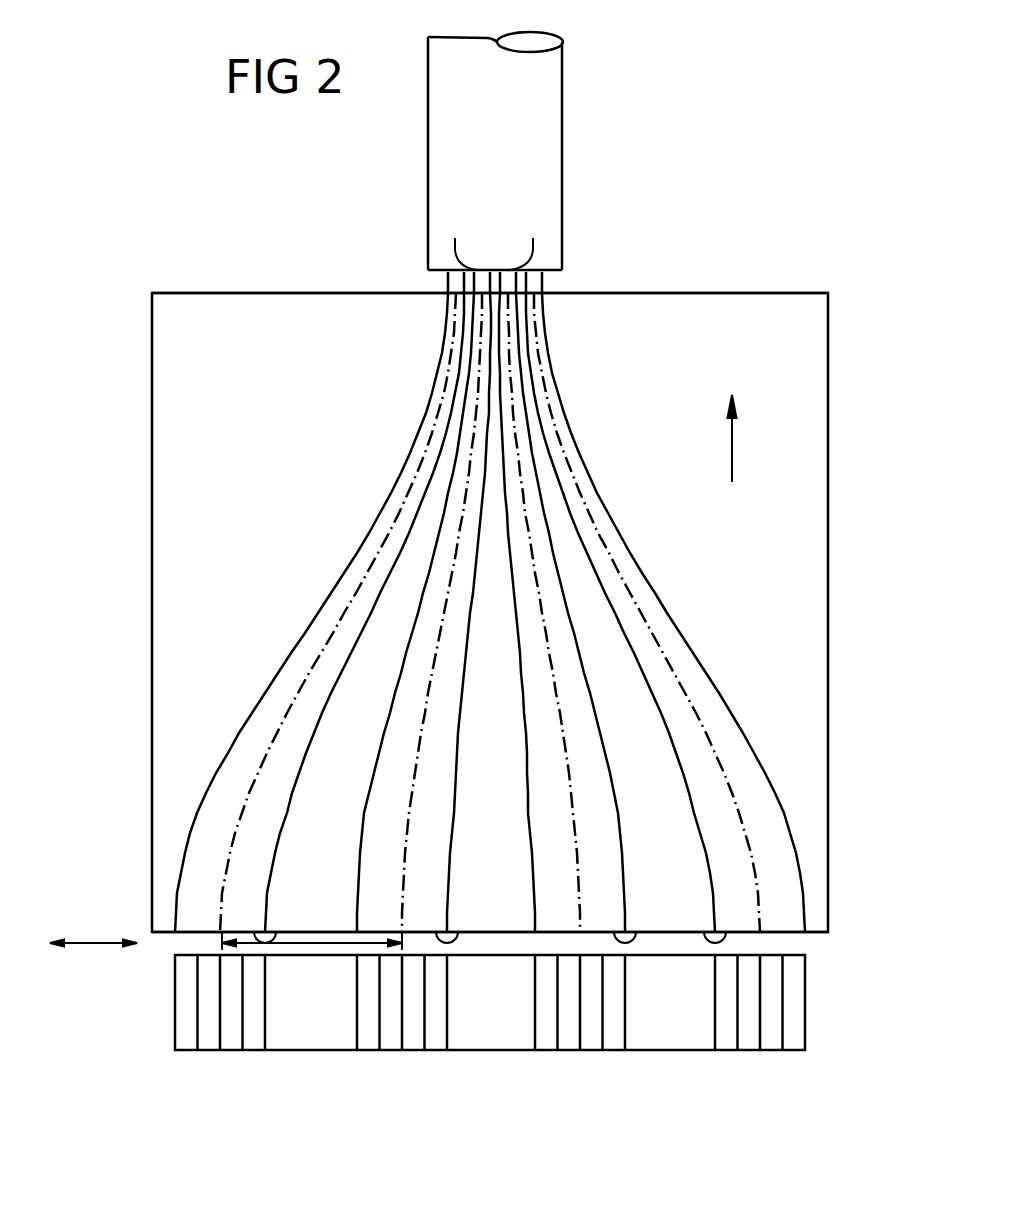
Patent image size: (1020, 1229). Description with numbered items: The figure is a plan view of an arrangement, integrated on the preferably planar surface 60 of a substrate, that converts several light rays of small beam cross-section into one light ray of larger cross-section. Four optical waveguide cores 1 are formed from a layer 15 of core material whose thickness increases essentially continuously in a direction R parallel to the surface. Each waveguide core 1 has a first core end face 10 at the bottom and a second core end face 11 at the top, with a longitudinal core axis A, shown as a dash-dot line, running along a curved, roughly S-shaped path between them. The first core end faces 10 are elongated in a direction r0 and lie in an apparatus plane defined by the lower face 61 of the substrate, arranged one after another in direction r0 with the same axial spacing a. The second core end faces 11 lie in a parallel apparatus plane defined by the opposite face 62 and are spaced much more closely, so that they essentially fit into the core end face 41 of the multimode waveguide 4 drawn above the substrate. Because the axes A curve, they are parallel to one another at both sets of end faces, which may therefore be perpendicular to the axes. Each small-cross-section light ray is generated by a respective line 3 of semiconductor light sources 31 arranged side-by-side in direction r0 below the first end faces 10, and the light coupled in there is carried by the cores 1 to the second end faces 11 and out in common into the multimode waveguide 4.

The optical waveguide core 1 is at (492, 612).
The line of semiconductor light sources 3 is at (490, 1052).
The multimode waveguide 4 is at (562, 126).
The first core end face 10 is at (713, 930).
The second core end face 11 is at (606, 279).
The layer 15 is at (334, 572).
The semiconductor light source 31 is at (256, 1035).
The core end face of the waveguide core of the multimode waveguide 41 is at (540, 282).
The planar surface 60 is at (800, 560).
The end face or lateral face 61 is at (826, 943).
The end face or lateral face 62 is at (766, 283).
The longitudinal core axis A is at (293, 705).
The direction R is at (733, 448).
The axial spacing a is at (312, 950).
The direction r0 is at (90, 942).